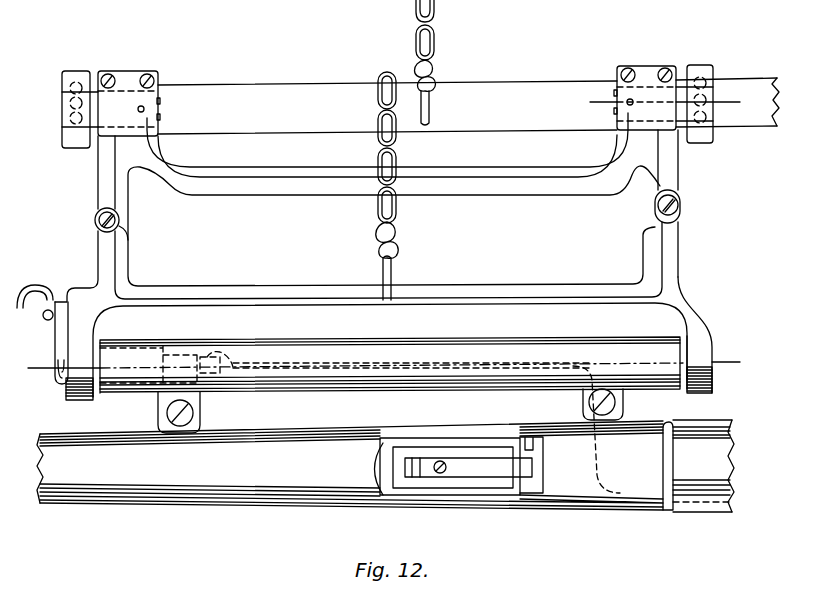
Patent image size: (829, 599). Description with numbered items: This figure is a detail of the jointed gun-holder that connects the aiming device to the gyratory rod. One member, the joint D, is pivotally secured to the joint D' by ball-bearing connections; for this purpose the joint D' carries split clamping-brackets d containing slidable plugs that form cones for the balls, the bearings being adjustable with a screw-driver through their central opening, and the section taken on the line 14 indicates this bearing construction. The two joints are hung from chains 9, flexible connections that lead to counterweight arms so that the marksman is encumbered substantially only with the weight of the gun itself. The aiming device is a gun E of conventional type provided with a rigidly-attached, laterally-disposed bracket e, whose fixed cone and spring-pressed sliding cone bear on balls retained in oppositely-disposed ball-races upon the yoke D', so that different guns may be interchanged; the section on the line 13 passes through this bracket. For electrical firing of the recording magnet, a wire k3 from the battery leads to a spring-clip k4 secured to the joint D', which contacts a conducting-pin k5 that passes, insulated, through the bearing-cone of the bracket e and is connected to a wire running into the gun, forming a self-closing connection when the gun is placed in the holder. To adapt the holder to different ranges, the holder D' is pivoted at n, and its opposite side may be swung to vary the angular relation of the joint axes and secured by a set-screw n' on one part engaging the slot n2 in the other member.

The joint D is at (420, 101).
The split clamping-brackets d is at (132, 72).
The section line 14 14 is at (662, 103).
The chains 9 is at (432, 32).
The joint D' is at (391, 207).
The pivot n is at (87, 217).
The set-screw n' is at (691, 194).
The slot n2 is at (681, 213).
The wire k3 is at (42, 296).
The spring-clip k4 is at (55, 381).
The section line 13 13 is at (385, 368).
The bracket e is at (457, 377).
The conducting-pin k5 is at (350, 368).
The gun E is at (296, 500).